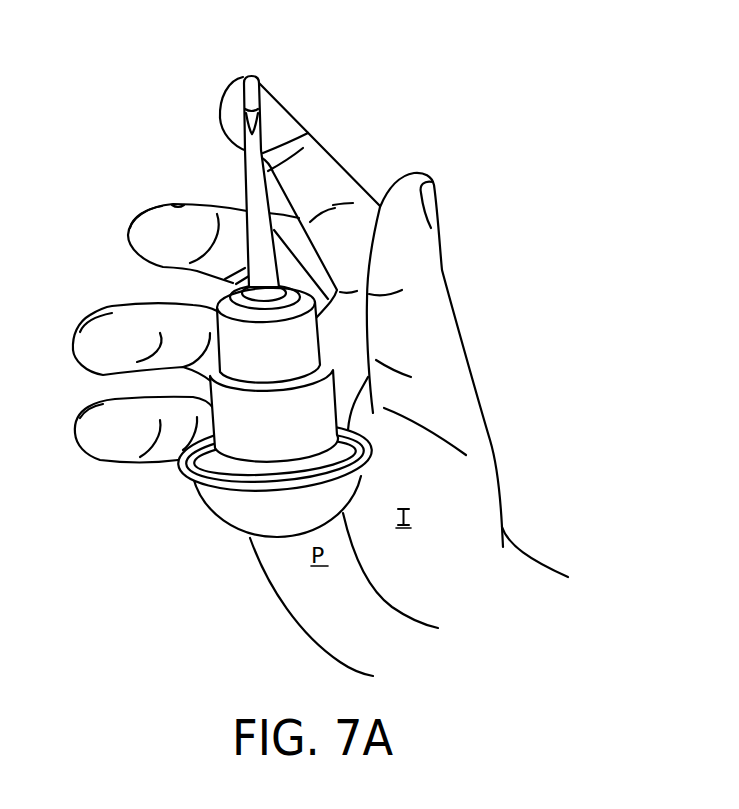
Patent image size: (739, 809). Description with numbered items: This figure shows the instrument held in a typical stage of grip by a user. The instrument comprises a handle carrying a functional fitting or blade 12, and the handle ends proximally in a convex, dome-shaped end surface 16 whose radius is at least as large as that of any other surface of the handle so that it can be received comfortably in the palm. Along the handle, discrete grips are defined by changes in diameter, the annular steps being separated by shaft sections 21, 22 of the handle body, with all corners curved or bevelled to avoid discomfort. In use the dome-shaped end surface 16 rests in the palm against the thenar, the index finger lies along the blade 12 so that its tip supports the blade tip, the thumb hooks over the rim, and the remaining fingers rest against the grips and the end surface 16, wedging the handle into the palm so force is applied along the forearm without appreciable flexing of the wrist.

The blade 12 is at (308, 133).
The proximal end surface 16 is at (237, 503).
The shaft section 21 is at (287, 430).
The shaft section 22 is at (287, 363).